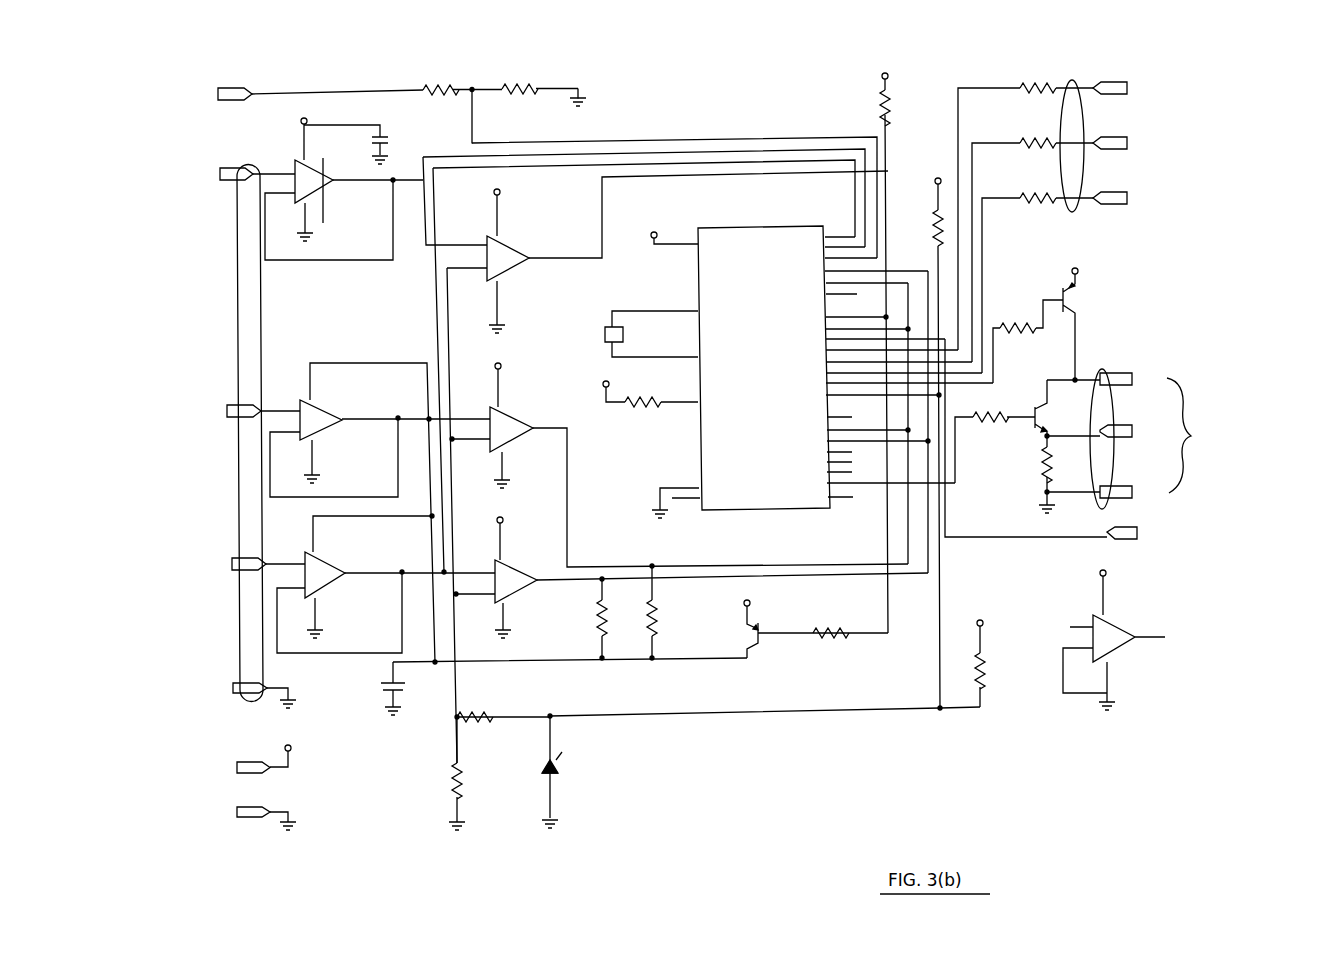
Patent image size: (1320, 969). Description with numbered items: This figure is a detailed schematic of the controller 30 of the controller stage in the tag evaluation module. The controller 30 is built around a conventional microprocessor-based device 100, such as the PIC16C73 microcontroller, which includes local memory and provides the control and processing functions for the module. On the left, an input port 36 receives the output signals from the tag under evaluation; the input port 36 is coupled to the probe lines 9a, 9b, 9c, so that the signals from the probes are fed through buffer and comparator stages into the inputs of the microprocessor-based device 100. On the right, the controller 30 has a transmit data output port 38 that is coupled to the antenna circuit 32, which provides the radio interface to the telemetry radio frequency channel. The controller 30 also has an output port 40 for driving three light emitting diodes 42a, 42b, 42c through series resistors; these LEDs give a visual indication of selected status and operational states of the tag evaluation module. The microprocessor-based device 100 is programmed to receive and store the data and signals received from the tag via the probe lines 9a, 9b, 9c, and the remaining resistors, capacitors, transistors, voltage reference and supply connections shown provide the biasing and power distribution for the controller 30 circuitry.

The controller 30 is at (1196, 71).
The input port 36 is at (250, 167).
The transmit data output port 38 is at (1096, 372).
The output port 40 is at (1072, 86).
The light emitting diode 42a is at (1109, 83).
The light emitting diode 42b is at (1110, 140).
The light emitting diode 42c is at (1108, 194).
The microprocessor-based device 100 is at (752, 228).
The antenna circuit 32 is at (1232, 436).
The probe line 9a is at (184, 418).
The probe line 9b is at (187, 569).
The probe line 9c is at (185, 184).